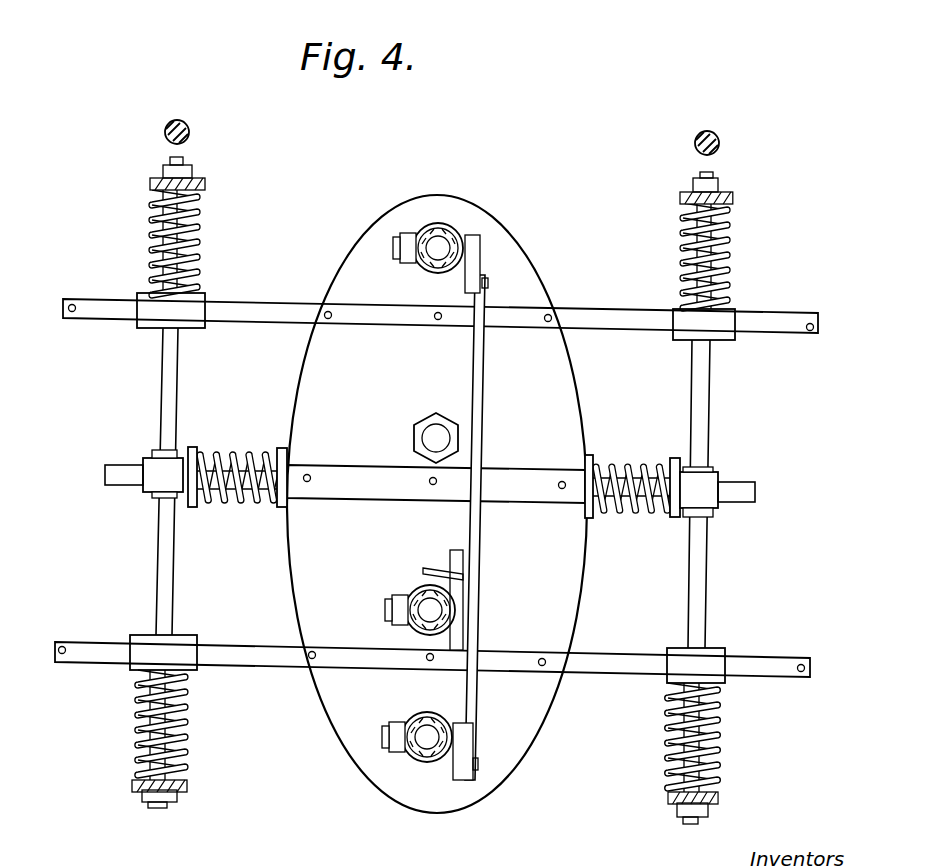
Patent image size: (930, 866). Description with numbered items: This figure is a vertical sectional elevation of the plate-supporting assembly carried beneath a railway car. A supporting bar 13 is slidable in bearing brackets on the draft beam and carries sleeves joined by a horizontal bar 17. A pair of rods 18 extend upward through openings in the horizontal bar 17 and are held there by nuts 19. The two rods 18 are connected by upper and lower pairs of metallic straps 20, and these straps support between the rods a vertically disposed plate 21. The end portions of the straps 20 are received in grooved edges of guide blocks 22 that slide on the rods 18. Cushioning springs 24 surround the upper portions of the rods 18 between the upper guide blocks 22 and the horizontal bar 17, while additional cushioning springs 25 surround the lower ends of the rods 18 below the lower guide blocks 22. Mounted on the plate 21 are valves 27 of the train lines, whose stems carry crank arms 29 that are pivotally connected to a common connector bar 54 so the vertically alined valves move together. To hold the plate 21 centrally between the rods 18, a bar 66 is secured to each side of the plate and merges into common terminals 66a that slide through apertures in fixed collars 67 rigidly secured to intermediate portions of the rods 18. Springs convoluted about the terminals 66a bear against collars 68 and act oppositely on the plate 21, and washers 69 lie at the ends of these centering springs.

The supporting bar 13 is at (720, 137).
The horizontal bar 17 is at (735, 196).
The rod 18 is at (168, 247).
The nut 19 is at (693, 182).
The metallic strap 20 is at (244, 308).
The plate 21 is at (573, 577).
The guide block 22 is at (147, 330).
The cushioning spring 24 is at (197, 228).
The cushioning spring 25 is at (140, 733).
The valve 27 is at (447, 222).
The crank arm 29 is at (473, 256).
The connector bar 54 is at (483, 410).
The bar 66 is at (345, 487).
The common terminal 66a is at (125, 477).
The fixed collar 67 is at (173, 500).
The collar 68 is at (227, 458).
The spring washer 69 is at (193, 448).